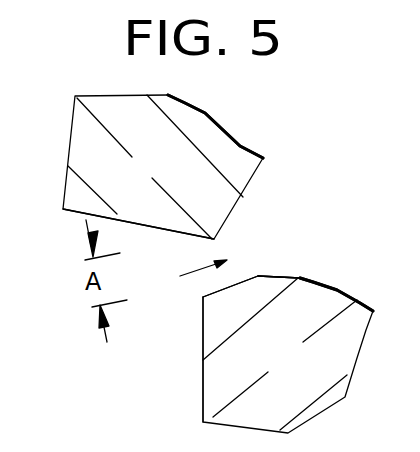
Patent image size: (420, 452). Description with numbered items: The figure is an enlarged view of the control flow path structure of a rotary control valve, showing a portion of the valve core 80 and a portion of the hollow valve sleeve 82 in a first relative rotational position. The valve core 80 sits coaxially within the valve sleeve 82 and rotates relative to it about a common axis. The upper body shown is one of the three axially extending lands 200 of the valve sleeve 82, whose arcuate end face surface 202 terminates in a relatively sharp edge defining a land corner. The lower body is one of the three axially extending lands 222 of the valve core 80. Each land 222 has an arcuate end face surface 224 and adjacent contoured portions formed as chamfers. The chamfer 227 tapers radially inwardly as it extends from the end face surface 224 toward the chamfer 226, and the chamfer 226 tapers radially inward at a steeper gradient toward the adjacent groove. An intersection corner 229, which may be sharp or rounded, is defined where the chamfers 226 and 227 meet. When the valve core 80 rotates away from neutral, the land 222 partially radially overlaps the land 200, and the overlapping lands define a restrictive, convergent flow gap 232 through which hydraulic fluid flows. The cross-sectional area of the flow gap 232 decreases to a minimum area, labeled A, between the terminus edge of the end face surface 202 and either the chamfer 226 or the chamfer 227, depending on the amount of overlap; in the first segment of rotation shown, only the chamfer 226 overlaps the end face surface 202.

The valve core 80 is at (295, 361).
The valve sleeve 82 is at (173, 176).
The land of valve sleeve 200 is at (187, 122).
The end face surface 202 is at (84, 212).
The land of valve core 222 is at (215, 380).
The end face surface 224 is at (382, 272).
The chamfer 226 is at (210, 293).
The chamfer 227 is at (270, 277).
The intersection corner 229 is at (258, 276).
The flow gap 232 is at (178, 277).